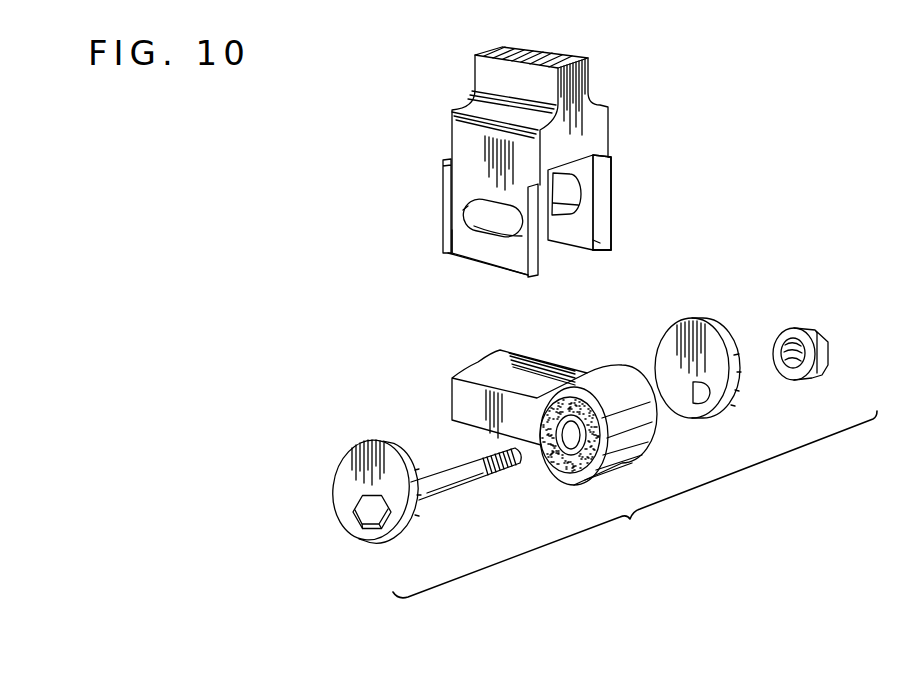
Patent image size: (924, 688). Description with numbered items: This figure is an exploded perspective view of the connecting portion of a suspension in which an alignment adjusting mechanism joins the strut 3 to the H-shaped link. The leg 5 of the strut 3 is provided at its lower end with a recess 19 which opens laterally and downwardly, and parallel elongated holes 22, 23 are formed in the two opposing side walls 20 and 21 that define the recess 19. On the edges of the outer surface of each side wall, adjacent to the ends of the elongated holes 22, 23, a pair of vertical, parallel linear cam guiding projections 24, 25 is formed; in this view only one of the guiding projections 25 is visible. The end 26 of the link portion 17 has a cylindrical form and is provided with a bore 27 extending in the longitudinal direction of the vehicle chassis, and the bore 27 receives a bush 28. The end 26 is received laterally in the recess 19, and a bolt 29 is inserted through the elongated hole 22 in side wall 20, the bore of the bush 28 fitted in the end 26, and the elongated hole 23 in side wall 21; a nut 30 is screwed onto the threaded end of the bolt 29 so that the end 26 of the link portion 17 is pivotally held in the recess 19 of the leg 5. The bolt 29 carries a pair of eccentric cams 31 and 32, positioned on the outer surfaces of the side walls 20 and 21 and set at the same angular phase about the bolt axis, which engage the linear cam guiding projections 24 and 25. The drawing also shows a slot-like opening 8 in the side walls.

The strut 3 is at (596, 120).
The leg 5 is at (584, 80).
The slot 8 is at (494, 224).
The link portion 17 is at (563, 380).
The recess 19 is at (568, 252).
The side wall 20 is at (469, 244).
The side wall 21 is at (613, 188).
The elongated hole 22 is at (470, 221).
The elongated hole 23 is at (596, 243).
The linear cam guiding projection 24 is at (527, 264).
The linear cam guiding projection 25 is at (447, 160).
The end of the link portion 26 is at (656, 424).
The bore 27 is at (577, 468).
The bush 28 is at (561, 463).
The bolt 29 is at (463, 492).
The nut 30 is at (831, 341).
The eccentric cam 31 is at (372, 437).
The eccentric cam 32 is at (718, 330).